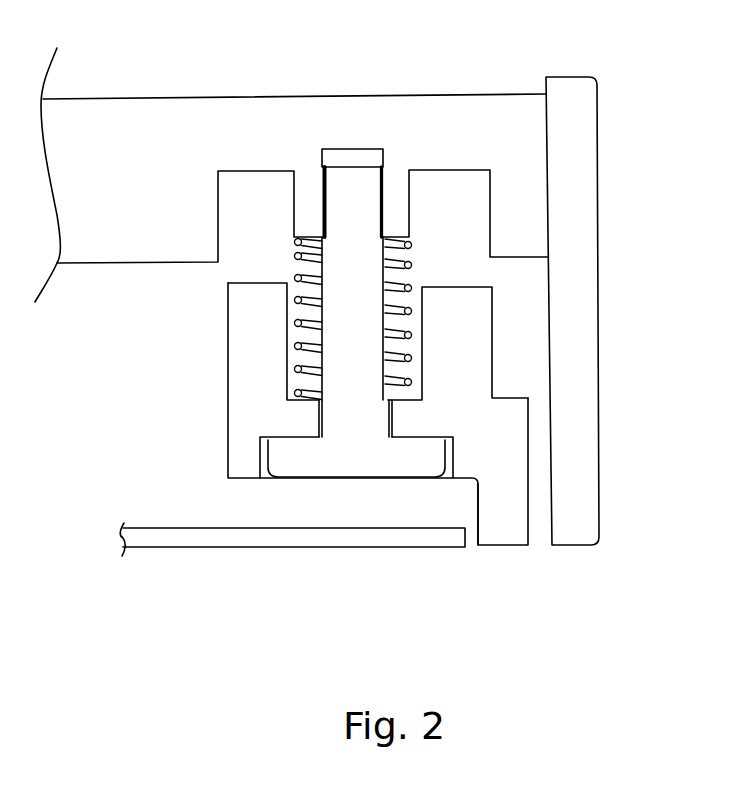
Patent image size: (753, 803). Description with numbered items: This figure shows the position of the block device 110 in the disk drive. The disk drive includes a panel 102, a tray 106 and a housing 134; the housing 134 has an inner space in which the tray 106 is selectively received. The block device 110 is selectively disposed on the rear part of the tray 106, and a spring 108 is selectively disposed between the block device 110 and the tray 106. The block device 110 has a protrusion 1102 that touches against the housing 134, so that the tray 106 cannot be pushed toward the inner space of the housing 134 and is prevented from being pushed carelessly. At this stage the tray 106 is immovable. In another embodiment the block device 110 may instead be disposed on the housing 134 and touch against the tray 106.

The panel 102 is at (590, 298).
The tray 106 is at (322, 103).
The spring 108 is at (297, 256).
The block device 110 is at (318, 445).
The protrusion 1102 is at (510, 530).
The housing 134 is at (175, 538).